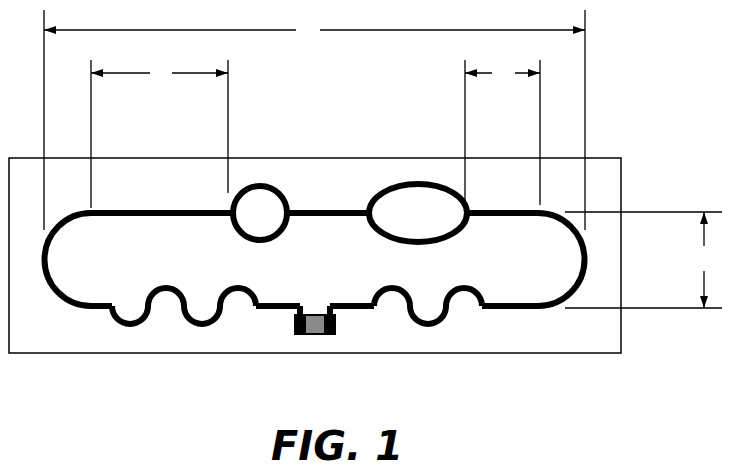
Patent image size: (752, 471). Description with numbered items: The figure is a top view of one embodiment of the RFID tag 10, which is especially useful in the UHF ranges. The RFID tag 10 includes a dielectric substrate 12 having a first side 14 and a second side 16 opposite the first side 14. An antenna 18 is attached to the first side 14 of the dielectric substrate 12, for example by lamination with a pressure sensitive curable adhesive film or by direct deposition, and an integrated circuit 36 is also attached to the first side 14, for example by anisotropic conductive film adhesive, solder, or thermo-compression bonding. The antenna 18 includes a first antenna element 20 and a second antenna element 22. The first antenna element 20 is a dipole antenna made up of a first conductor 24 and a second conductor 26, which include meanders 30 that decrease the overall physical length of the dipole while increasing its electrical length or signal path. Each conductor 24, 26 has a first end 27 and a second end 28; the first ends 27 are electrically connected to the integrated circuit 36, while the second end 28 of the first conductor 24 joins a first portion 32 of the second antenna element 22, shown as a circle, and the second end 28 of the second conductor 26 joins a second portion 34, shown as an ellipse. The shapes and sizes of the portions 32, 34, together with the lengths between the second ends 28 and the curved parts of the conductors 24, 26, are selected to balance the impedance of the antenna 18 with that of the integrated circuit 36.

The RFID tag 10 is at (617, 120).
The dielectric substrate 12 is at (608, 189).
The first side 14 is at (600, 274).
The second side 16 is at (608, 337).
The antenna 18 is at (134, 198).
The first antenna element 20 is at (196, 329).
The second antenna element 22 is at (383, 187).
The first conductor 24 is at (62, 298).
The second conductor 26 is at (556, 307).
The first end 27 is at (302, 313).
The second end 28 is at (238, 206).
The meanders 30 is at (200, 312).
The first portion 32 is at (283, 222).
The second portion 34 is at (370, 213).
The integrated circuit 36 is at (313, 337).